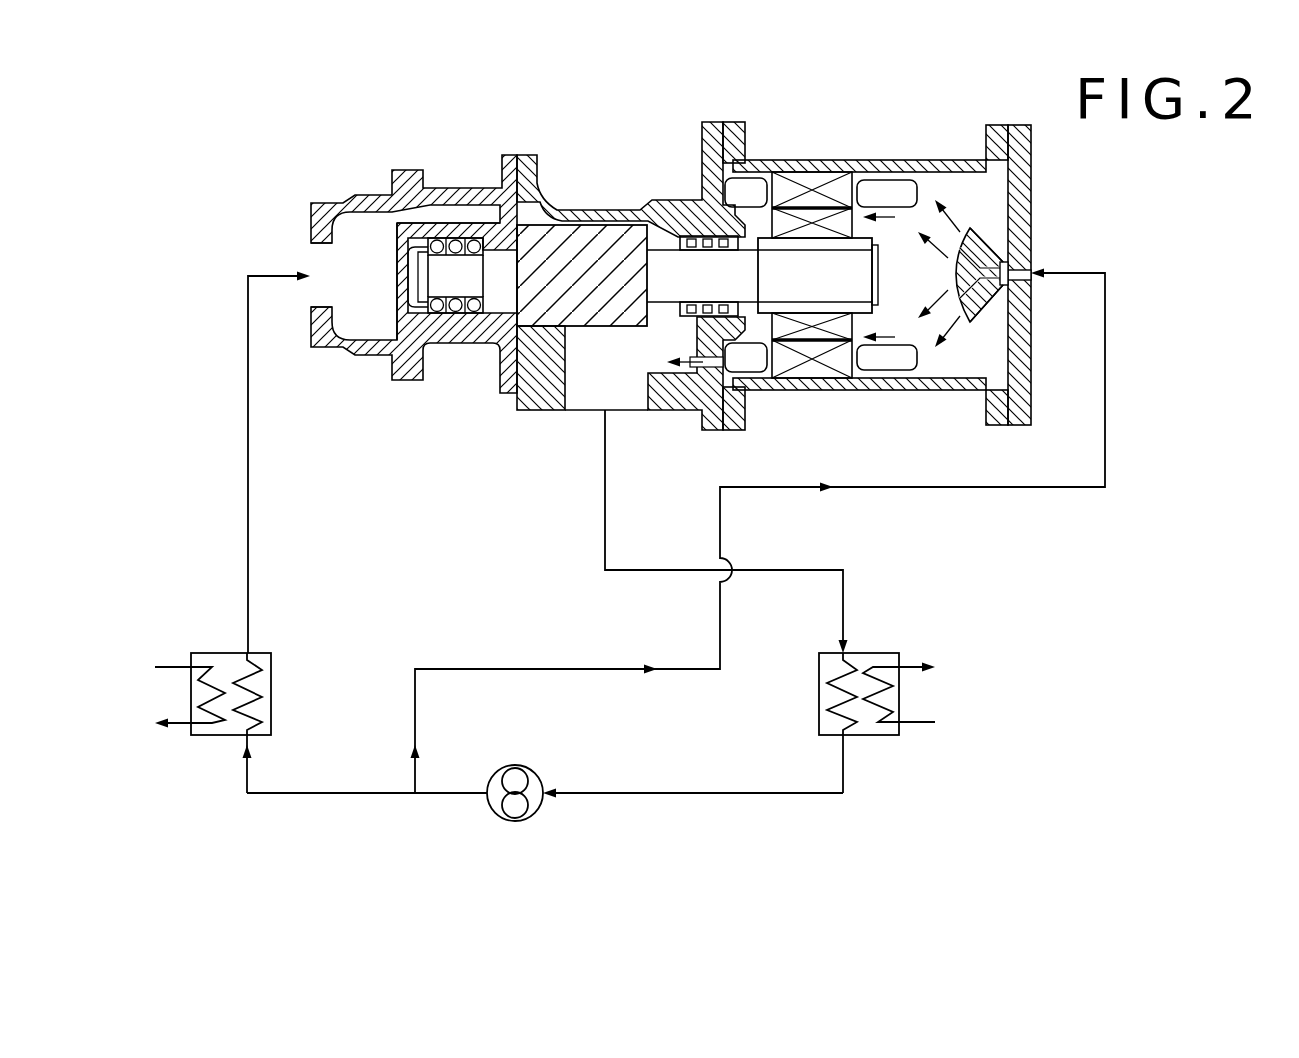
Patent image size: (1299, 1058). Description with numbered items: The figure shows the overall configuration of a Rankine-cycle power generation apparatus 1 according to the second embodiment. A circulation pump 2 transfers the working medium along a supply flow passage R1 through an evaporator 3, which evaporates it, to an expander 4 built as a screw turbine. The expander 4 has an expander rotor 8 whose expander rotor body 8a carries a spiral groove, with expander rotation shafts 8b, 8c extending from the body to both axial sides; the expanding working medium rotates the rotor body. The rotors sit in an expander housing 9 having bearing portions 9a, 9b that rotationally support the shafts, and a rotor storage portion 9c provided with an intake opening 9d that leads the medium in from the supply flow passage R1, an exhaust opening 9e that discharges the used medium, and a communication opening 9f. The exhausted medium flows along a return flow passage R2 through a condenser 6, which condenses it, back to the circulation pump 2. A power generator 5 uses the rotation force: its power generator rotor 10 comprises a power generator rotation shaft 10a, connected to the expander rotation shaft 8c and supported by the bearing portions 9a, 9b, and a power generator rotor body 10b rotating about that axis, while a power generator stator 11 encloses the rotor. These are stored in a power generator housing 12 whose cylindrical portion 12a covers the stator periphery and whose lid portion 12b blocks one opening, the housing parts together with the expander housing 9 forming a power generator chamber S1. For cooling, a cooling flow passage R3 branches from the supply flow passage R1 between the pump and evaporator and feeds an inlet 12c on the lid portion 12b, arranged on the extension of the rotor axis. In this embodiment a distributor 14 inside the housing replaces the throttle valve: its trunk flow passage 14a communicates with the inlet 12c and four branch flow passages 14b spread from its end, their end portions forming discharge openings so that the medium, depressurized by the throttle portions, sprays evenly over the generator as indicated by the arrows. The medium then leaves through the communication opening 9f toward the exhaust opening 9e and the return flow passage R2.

The power generation apparatus 1 is at (228, 126).
The circulation pump 2 is at (528, 760).
The evaporator 3 is at (278, 636).
The expander 4 is at (386, 151).
The power generator 5 is at (881, 244).
The condenser 6 is at (896, 637).
The expander rotor 8 is at (537, 362).
The expander rotor body 8a is at (535, 393).
The expander rotation shaft 8b is at (455, 305).
The expander rotation shaft 8c is at (667, 283).
The expander housing 9 is at (571, 268).
The bearing portion 9a is at (453, 236).
The bearing portion 9b is at (676, 216).
The rotor storage portion 9c is at (540, 198).
The intake opening 9d is at (310, 252).
The exhaust opening 9e is at (700, 345).
The communication opening 9f is at (700, 395).
The power generator rotor 10 is at (765, 265).
The power generator rotation shaft 10a is at (740, 277).
The power generator rotor body 10b is at (818, 275).
The power generator stator 11 is at (773, 182).
The power generator housing 12 is at (919, 241).
The cylindrical portion 12a is at (935, 162).
The lid portion 12b is at (1030, 163).
The inlet 12c is at (1030, 268).
The distributor 14 is at (1028, 279).
The trunk flow passage 14a is at (1000, 285).
The branch flow passage 14b is at (990, 250).
The supply flow passage R1 is at (248, 530).
The return flow passage R2 is at (605, 540).
The cooling flow passage R3 is at (768, 487).
The power generator chamber S1 is at (925, 286).